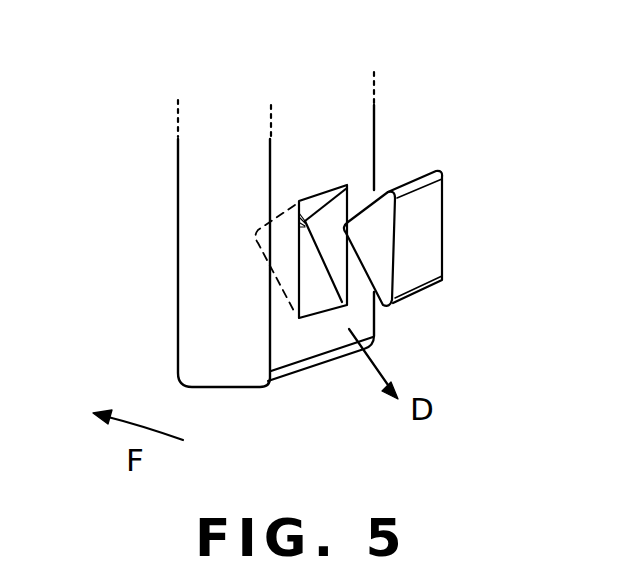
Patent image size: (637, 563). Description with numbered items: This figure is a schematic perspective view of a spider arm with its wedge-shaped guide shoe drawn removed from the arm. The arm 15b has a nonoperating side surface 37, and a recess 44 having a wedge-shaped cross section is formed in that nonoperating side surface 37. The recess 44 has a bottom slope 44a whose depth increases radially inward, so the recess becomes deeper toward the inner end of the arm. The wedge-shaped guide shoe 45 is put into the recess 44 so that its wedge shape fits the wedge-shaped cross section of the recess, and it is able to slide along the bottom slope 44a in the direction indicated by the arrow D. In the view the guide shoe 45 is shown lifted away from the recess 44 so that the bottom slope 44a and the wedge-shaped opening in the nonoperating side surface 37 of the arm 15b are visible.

The arm 15b is at (197, 292).
The nonoperating side surface 37 is at (313, 353).
The recess 44 is at (328, 213).
The bottom slope 44a is at (310, 299).
The wedge-shaped guide shoe 45 is at (421, 250).